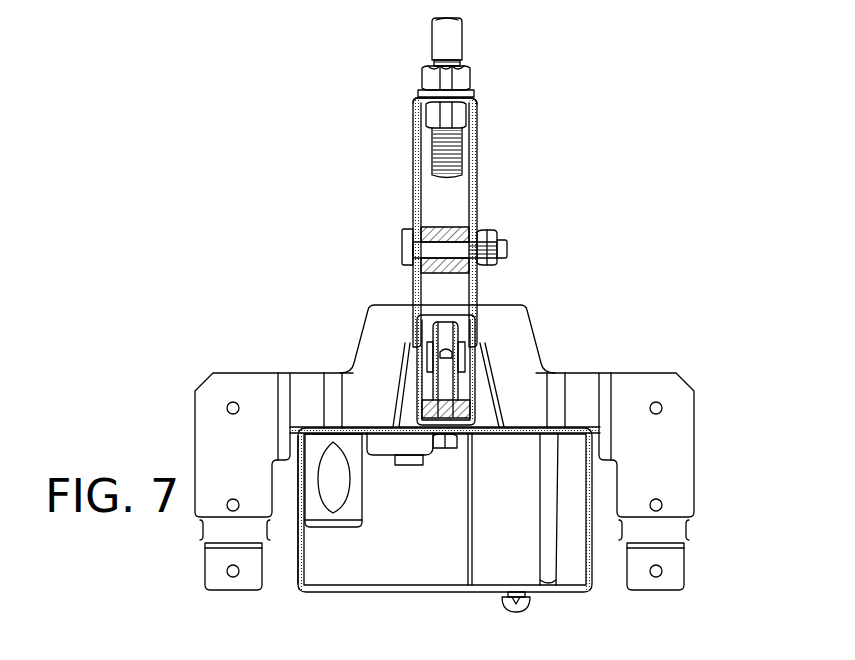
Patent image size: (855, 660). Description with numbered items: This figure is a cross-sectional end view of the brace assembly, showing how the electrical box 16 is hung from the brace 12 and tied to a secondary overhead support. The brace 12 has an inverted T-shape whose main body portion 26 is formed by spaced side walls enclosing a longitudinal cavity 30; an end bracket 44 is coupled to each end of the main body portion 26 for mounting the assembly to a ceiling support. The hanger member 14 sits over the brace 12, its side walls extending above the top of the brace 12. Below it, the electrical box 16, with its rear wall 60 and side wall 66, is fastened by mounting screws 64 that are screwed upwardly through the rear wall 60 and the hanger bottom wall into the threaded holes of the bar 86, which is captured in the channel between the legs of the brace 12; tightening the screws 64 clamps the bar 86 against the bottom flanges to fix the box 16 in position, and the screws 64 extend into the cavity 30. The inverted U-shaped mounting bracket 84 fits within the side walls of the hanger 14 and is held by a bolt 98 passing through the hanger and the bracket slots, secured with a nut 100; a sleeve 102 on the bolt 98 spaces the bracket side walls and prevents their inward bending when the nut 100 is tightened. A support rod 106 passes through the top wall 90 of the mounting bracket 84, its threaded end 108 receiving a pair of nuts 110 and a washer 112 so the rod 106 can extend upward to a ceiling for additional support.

The brace 12 is at (462, 377).
The hanger member 14 is at (405, 305).
The electrical box 16 is at (296, 590).
The main body portion 26 is at (462, 333).
The longitudinal cavity 30 is at (445, 380).
The end bracket 44 is at (661, 373).
The rear wall 60 is at (525, 440).
The mounting screws 64 is at (445, 450).
The side wall 66 is at (303, 563).
The mounting bracket 84 is at (477, 165).
The bar 86 is at (432, 398).
The top wall 90 is at (420, 100).
The bolt 98 is at (402, 248).
The nut 100 is at (490, 232).
The sleeve 102 is at (442, 228).
The support rod 106 is at (460, 42).
The threaded end 108 is at (432, 160).
The nuts 110 is at (464, 114).
The washer 112 is at (420, 93).